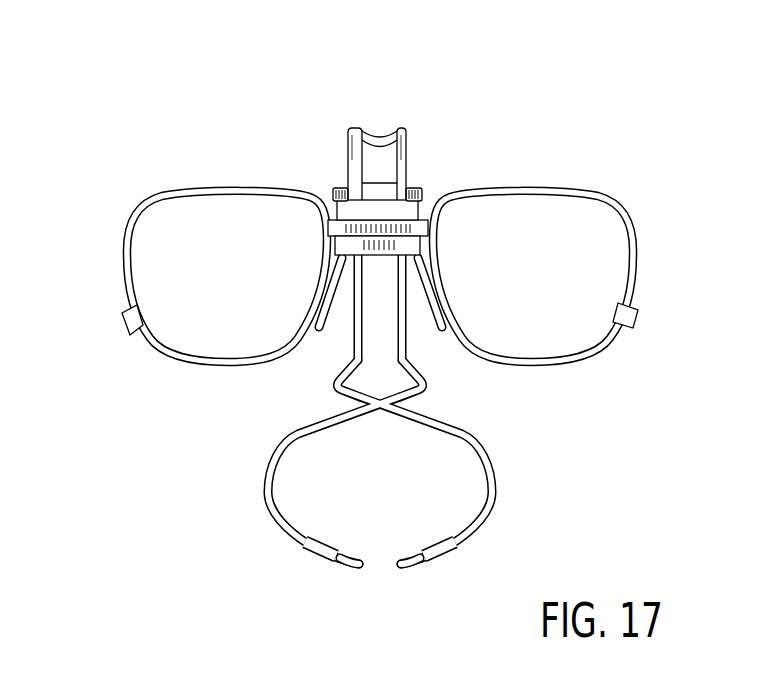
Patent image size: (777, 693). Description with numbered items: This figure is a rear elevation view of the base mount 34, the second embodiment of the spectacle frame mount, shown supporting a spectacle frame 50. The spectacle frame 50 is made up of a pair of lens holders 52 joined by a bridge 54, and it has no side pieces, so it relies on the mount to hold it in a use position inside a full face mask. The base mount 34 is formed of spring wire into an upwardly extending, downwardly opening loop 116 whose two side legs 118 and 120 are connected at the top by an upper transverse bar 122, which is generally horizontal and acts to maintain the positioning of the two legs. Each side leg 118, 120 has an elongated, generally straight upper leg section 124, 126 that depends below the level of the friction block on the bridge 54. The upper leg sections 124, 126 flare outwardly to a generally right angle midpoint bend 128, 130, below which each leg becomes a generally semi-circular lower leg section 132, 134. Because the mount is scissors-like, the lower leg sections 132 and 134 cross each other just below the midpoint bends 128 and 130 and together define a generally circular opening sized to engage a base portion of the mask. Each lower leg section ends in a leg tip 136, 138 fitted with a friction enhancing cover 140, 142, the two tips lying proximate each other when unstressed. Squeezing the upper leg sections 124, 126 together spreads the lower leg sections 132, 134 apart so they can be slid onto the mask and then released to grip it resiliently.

The base mount 34 is at (523, 118).
The spectacle frame 50 is at (647, 213).
The lens holders 52 is at (125, 310).
The bridge 54 is at (330, 197).
The upwardly extending, downwardly opening loop 116 is at (337, 120).
The loop side leg 118 is at (407, 180).
The loop side leg 120 is at (345, 162).
The upper transverse bar 122 is at (377, 137).
The upper leg section 124 is at (403, 345).
The upper leg section 126 is at (350, 356).
The midpoint bend 128 is at (427, 388).
The midpoint bend 130 is at (333, 390).
The lower leg section 132 is at (267, 510).
The lower leg section 134 is at (497, 502).
The leg tip 136 is at (362, 570).
The leg tip 138 is at (400, 573).
The friction enhancing cover 140 is at (335, 558).
The friction enhancing cover 142 is at (445, 548).